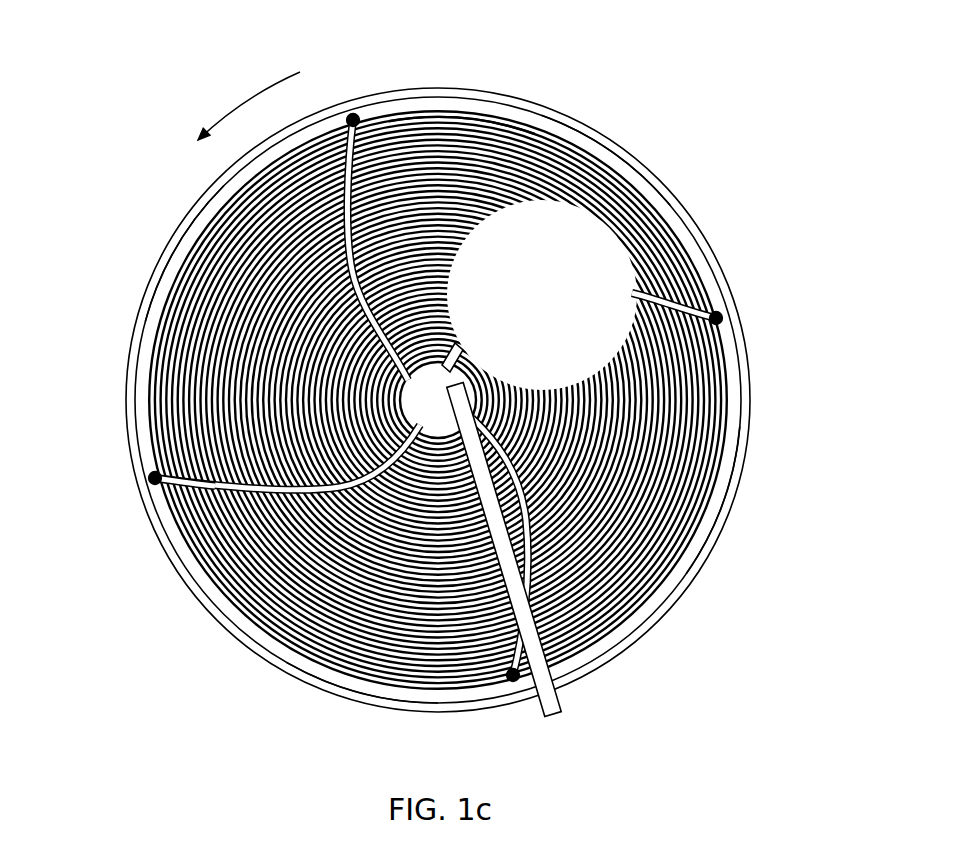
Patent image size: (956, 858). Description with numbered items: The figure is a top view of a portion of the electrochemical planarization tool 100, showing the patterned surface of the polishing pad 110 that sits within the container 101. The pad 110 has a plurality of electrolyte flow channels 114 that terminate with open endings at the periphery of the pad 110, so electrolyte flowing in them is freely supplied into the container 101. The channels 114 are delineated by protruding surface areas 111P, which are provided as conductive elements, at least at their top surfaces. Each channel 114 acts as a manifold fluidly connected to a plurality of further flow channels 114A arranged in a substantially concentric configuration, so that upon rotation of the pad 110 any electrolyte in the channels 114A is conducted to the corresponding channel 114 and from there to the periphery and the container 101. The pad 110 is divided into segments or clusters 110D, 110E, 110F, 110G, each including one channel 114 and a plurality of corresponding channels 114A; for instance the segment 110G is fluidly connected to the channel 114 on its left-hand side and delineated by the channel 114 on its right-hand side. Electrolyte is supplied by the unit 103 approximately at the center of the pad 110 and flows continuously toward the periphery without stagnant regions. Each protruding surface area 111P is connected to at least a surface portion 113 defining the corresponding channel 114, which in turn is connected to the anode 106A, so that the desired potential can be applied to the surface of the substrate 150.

The electrochemical planarization tool 100 is at (772, 60).
The container 101 is at (657, 165).
The electrolyte supply unit 103 is at (565, 698).
The anode 106A is at (353, 113).
The polishing pad 110 is at (556, 120).
The segment or cluster 110D is at (182, 246).
The segment or cluster 110E is at (600, 150).
The segment or cluster 110F is at (726, 500).
The segment or cluster 110G is at (366, 688).
The protruding surface area 111P is at (452, 118).
The surface portion 113 is at (150, 468).
The electrolyte flow channel 114 is at (208, 500).
The further flow channel 114A is at (490, 628).
The substrate 150 is at (598, 235).